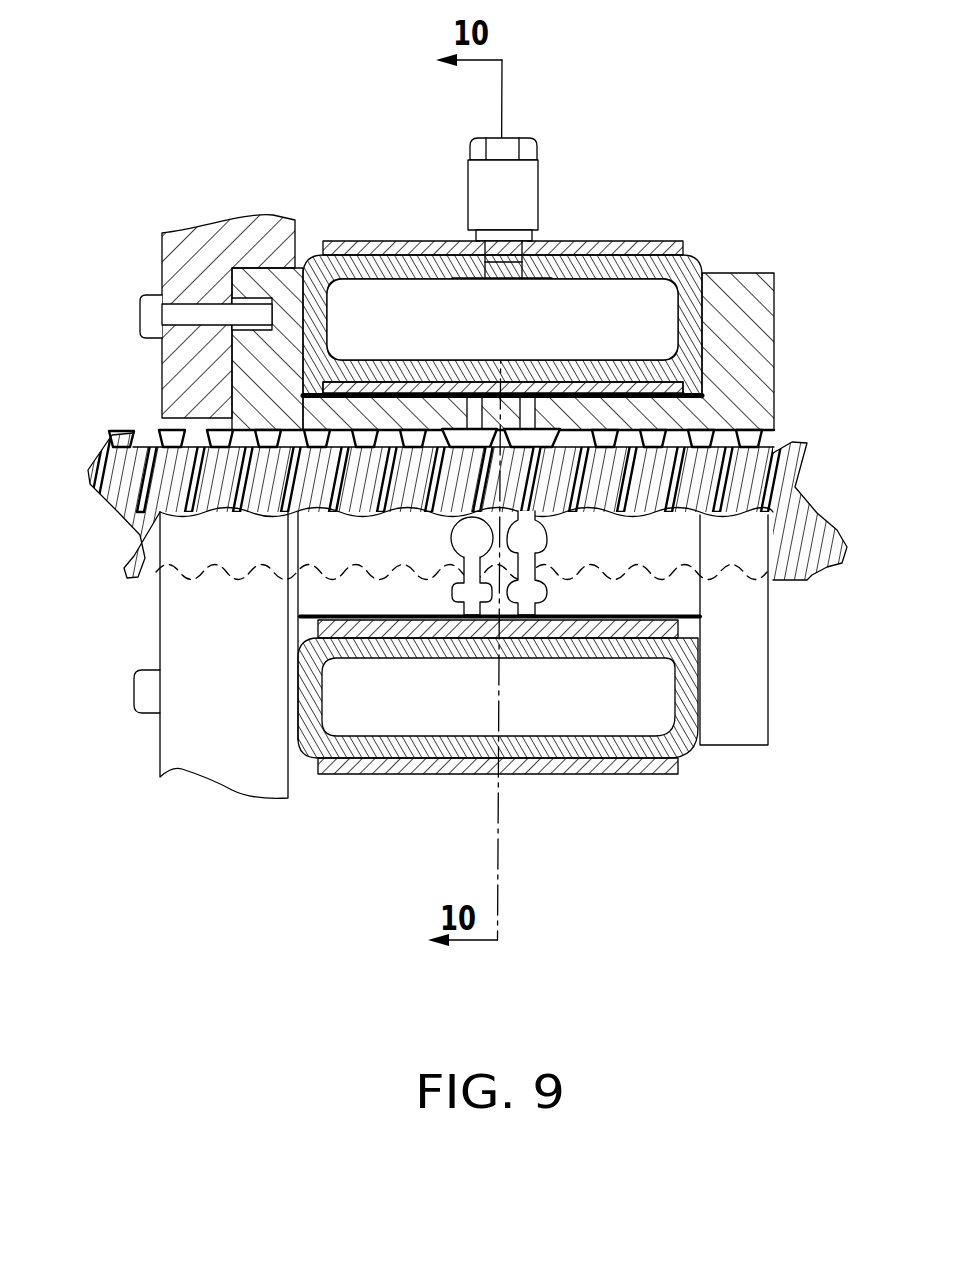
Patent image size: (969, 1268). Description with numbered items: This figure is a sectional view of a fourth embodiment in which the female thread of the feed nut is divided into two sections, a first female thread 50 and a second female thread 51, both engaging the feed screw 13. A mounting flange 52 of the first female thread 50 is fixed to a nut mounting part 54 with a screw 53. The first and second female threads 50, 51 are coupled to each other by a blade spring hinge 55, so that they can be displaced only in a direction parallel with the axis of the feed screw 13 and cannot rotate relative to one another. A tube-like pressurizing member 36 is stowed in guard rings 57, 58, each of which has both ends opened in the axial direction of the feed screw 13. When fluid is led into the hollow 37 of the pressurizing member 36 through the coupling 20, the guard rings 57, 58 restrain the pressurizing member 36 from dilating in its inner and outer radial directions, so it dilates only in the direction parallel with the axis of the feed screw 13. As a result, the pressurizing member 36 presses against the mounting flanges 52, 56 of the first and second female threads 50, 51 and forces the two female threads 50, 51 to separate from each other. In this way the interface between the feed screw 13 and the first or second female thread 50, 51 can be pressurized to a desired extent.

The feed screw 13 is at (803, 548).
The coupling 20 is at (517, 197).
The pressurizing member 36 is at (687, 277).
The hollow 37 is at (598, 310).
The first female thread 50 is at (338, 426).
The second female thread 51 is at (667, 437).
The mounting flange 52 is at (288, 284).
The screw 53 is at (150, 294).
The nut mounting part 54 is at (205, 248).
The blade spring hinge 55 is at (439, 598).
The mounting flange 56 is at (767, 302).
The guard ring 57 is at (627, 772).
The guard ring 58 is at (681, 748).